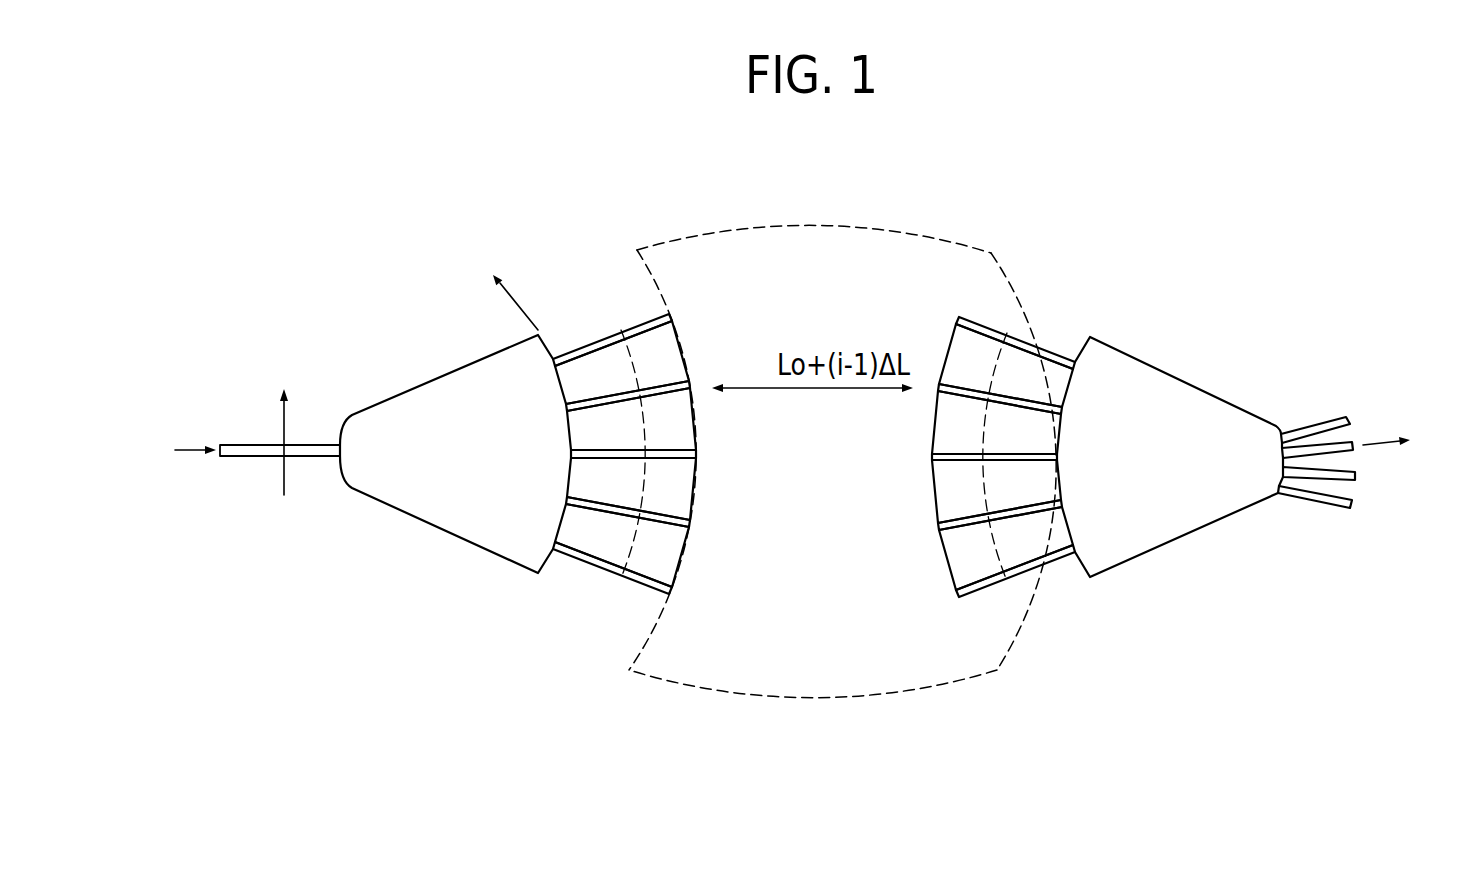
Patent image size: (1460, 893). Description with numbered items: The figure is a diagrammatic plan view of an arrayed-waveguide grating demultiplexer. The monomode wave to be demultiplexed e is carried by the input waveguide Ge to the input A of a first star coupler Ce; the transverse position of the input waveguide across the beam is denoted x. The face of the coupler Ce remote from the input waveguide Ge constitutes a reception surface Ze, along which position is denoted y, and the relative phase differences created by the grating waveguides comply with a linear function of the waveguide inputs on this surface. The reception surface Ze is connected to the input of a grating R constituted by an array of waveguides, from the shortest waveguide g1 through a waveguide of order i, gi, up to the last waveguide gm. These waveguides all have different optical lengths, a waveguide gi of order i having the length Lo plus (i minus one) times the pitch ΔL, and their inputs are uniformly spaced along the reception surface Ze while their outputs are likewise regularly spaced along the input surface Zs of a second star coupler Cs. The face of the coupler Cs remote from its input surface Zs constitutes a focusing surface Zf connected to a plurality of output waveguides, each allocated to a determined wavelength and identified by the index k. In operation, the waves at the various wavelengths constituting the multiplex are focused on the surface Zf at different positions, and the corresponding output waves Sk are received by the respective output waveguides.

The input wave e is at (182, 447).
The input waveguide Ge is at (246, 456).
The transverse position x is at (284, 421).
The position along reception surface y is at (520, 305).
The input of first star coupler A is at (357, 452).
The first star coupler Ce is at (426, 413).
The reception surface Ze is at (577, 447).
The m-th waveguide of the grating array gm is at (588, 352).
The waveguide of order i of the grating array gi is at (626, 403).
The shortest waveguide of the grating array g1 is at (588, 566).
The grating R is at (835, 658).
The input surface of second star coupler Zs is at (1053, 480).
The second star coupler Cs is at (1157, 403).
The focusing surface Zf is at (1282, 430).
The output waveguide index k is at (1325, 448).
The output wave Sk is at (1377, 443).